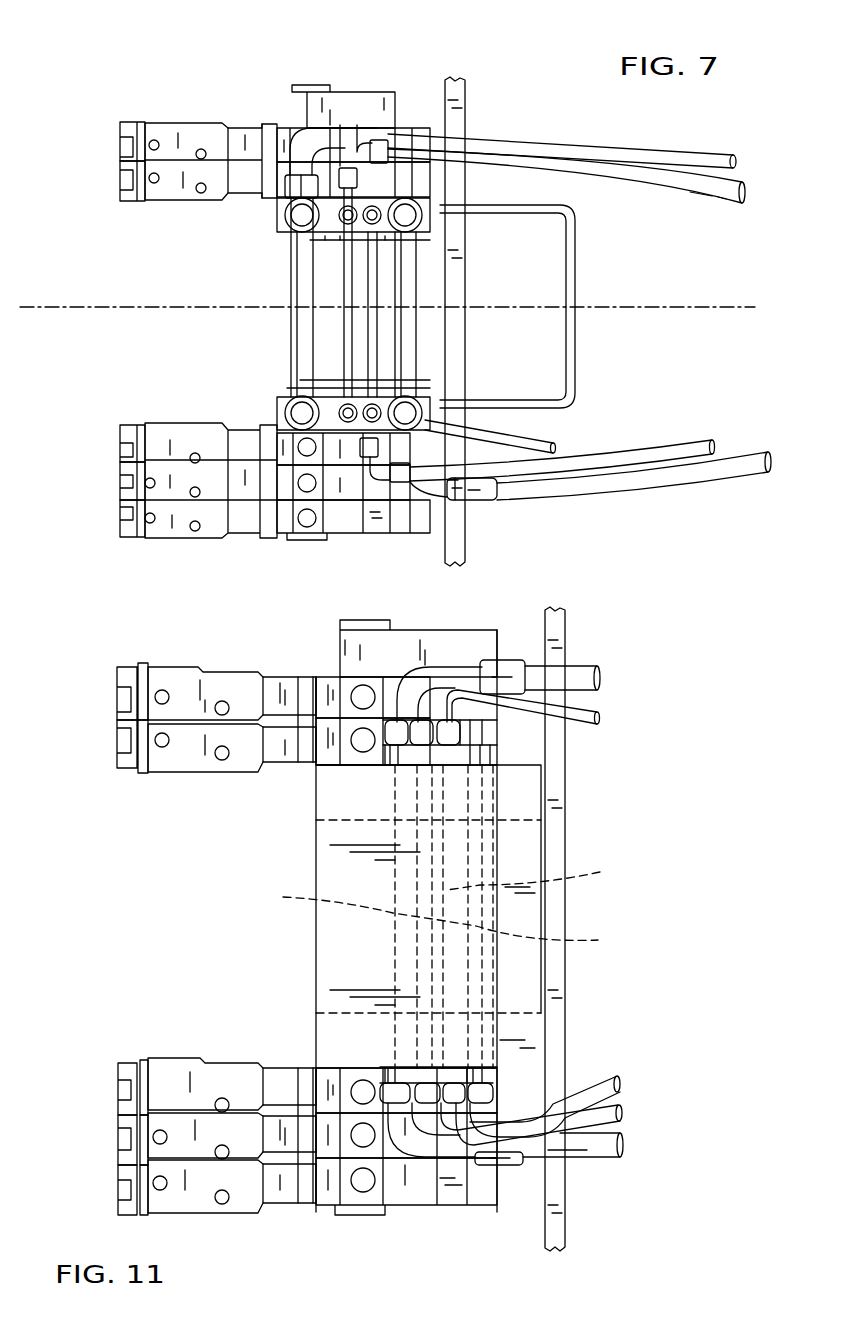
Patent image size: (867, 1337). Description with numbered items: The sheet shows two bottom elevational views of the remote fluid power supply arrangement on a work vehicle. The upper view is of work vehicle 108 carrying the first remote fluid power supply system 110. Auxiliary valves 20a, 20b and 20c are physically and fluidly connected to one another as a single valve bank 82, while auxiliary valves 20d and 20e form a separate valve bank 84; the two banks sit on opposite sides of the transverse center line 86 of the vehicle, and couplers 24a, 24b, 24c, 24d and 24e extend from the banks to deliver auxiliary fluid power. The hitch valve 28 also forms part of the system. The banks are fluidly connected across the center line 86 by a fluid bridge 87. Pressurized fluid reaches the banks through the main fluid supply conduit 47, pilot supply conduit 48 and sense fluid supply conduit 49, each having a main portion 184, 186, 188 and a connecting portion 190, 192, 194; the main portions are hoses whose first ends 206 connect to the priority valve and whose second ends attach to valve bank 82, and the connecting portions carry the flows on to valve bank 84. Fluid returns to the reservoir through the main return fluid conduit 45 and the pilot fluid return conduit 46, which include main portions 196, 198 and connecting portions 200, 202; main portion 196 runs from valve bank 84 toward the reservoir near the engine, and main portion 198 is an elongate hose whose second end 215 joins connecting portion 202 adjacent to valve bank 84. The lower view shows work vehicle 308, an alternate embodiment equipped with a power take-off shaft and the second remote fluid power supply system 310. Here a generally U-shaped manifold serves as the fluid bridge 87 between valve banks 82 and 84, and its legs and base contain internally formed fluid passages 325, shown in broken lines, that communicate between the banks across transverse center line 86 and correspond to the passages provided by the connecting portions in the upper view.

In FIG. 7, the work vehicle 108 is at (156, 63).
In FIG. 7, the remote fluid power supply system 110 is at (207, 120).
In FIG. 7, the coupler 24a is at (121, 521).
In FIG. 11, the coupler 24a is at (121, 1184).
In FIG. 7, the coupler 24b is at (121, 485).
In FIG. 11, the coupler 24b is at (121, 1136).
In FIG. 7, the coupler 24c is at (121, 447).
In FIG. 11, the coupler 24c is at (121, 1094).
In FIG. 7, the coupler 24d is at (122, 182).
In FIG. 11, the coupler 24d is at (126, 743).
In FIG. 7, the coupler 24e is at (122, 143).
In FIG. 11, the coupler 24e is at (126, 697).
In FIG. 7, the auxiliary valve 20a is at (398, 534).
In FIG. 11, the auxiliary valve 20a is at (476, 1208).
In FIG. 7, the auxiliary valve 20b is at (350, 480).
In FIG. 11, the auxiliary valve 20b is at (390, 1148).
In FIG. 7, the auxiliary valve 20c is at (295, 455).
In FIG. 11, the auxiliary valve 20c is at (340, 1100).
In FIG. 7, the auxiliary valve 20d is at (280, 190).
In FIG. 11, the auxiliary valve 20d is at (327, 756).
In FIG. 7, the auxiliary valve 20e is at (298, 136).
In FIG. 11, the auxiliary valve 20e is at (327, 688).
In FIG. 7, the hitch valve 28 is at (368, 94).
In FIG. 11, the hitch valve 28 is at (470, 630).
In FIG. 7, the valve bank 84 is at (398, 90).
In FIG. 11, the valve bank 84 is at (486, 626).
In FIG. 7, the valve bank 82 is at (414, 540).
In FIG. 11, the valve bank 82 is at (490, 1212).
In FIG. 7, the transverse center line 86 is at (655, 304).
In FIG. 7, the fluid bridge 87 is at (256, 353).
In FIG. 7, the second end 206 is at (287, 153).
In FIG. 7, the second end 215 is at (353, 143).
In FIG. 7, the connecting portion 202 is at (340, 283).
In FIG. 7, the connecting portion 194 is at (382, 312).
In FIG. 7, the connecting portion 190 is at (415, 380).
In FIG. 7, the connecting portion 192 is at (578, 352).
In FIG. 7, the main portion 196 is at (546, 134).
In FIG. 11, the main portion 196 is at (597, 678).
In FIG. 7, the main portion 198 is at (700, 153).
In FIG. 11, the main portion 198 is at (601, 712).
In FIG. 7, the connecting portion 200 is at (287, 380).
In FIG. 7, the main portion 184 is at (635, 495).
In FIG. 11, the main portion 184 is at (626, 1148).
In FIG. 7, the main portion 186 is at (543, 440).
In FIG. 11, the main portion 186 is at (618, 1082).
In FIG. 7, the main portion 188 is at (660, 442).
In FIG. 11, the main portion 188 is at (623, 1118).
In FIG. 7, the main return fluid conduit 45 is at (503, 129).
In FIG. 11, the main return fluid conduit 45 is at (583, 664).
In FIG. 7, the pilot fluid return conduit 46 is at (511, 165).
In FIG. 11, the pilot fluid return conduit 46 is at (585, 727).
In FIG. 7, the main fluid supply conduit 47 is at (590, 500).
In FIG. 11, the main fluid supply conduit 47 is at (606, 1163).
In FIG. 7, the pilot supply conduit 48 is at (518, 428).
In FIG. 11, the pilot supply conduit 48 is at (618, 1067).
In FIG. 7, the sense fluid supply conduit 49 is at (633, 441).
In FIG. 11, the sense fluid supply conduit 49 is at (630, 1125).
In FIG. 11, the work vehicle 308 is at (48, 700).
In FIG. 11, the remote fluid power supply system 310 is at (229, 665).
In FIG. 11, the fluid passage 325 is at (440, 907).